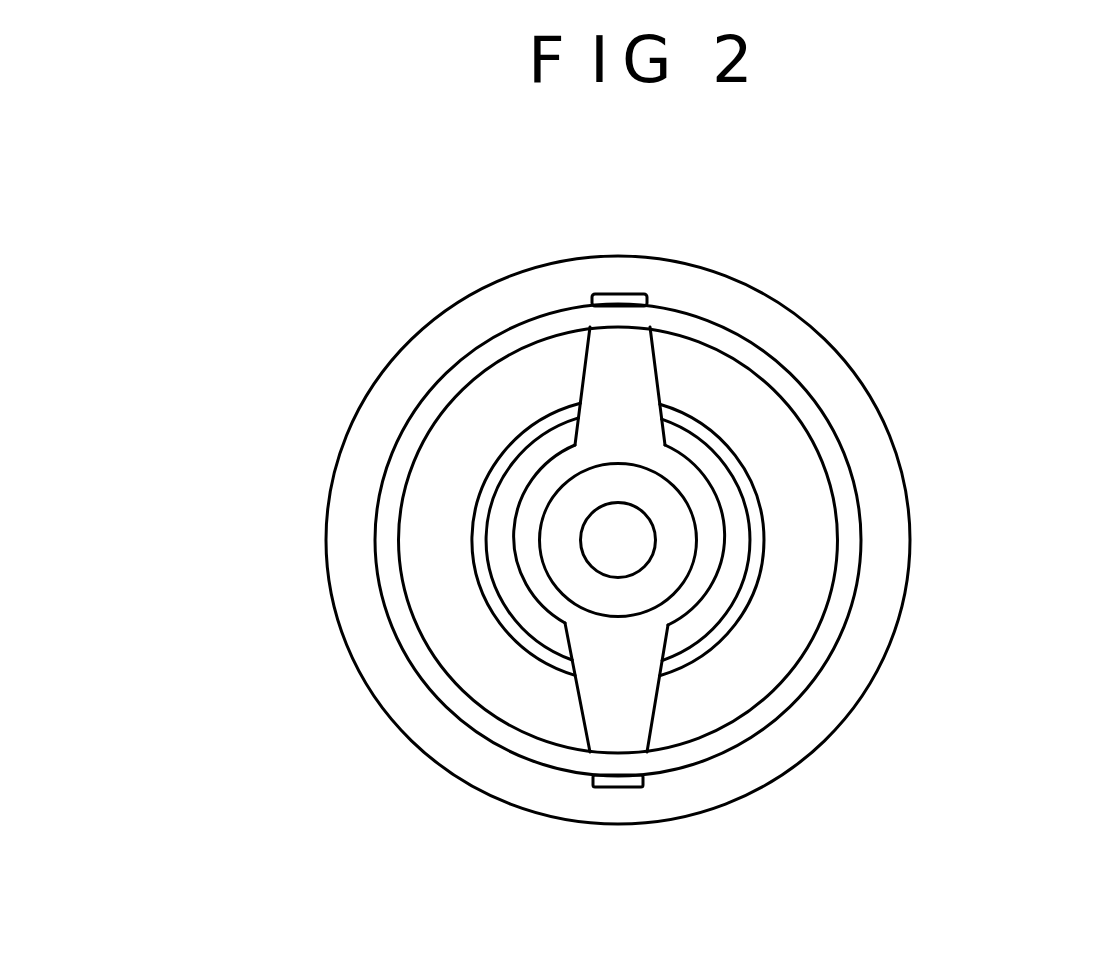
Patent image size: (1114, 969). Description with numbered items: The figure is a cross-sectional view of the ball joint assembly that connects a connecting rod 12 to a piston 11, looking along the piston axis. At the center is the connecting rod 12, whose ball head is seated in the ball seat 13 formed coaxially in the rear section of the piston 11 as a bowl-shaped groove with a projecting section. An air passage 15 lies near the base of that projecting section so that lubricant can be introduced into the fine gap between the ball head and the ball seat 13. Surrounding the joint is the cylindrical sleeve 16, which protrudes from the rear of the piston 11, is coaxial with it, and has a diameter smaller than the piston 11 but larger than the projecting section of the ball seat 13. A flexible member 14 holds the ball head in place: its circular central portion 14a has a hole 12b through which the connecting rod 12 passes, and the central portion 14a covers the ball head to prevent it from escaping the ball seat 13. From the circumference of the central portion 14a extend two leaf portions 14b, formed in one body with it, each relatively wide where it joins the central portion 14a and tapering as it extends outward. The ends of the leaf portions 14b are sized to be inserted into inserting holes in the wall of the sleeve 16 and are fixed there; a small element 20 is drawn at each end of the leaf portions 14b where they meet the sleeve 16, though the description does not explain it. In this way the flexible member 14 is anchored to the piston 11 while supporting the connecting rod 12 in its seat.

The piston 11 is at (718, 286).
The connecting rod 12 is at (636, 524).
The hole 12b is at (660, 572).
The ball seat 13 is at (720, 632).
The flexible member 14 is at (660, 723).
The central portion 14a is at (522, 553).
The leaf portion 14b is at (593, 733).
The air passage 15 is at (705, 430).
The cylindrical sleeve 16 is at (715, 745).
The stop projection 20 is at (621, 293).